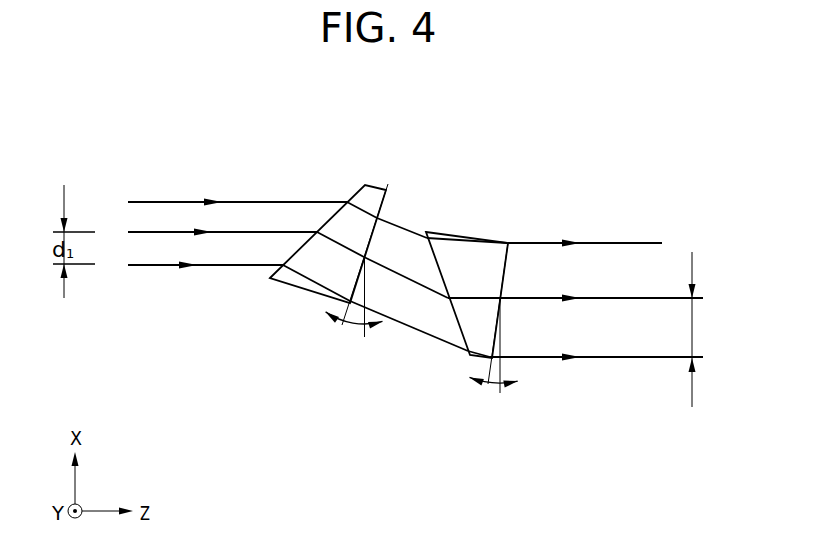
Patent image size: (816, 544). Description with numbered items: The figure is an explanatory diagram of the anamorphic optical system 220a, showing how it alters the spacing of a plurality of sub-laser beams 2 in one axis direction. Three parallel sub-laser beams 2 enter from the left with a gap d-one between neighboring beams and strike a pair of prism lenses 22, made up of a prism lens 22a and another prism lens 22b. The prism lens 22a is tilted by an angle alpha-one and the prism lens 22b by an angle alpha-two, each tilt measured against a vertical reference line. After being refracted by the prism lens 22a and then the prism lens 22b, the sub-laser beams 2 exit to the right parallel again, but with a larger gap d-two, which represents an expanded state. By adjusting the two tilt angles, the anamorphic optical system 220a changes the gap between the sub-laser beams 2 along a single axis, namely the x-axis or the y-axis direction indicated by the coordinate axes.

The sub-laser beams 2 is at (225, 267).
The prism lenses 22 is at (394, 355).
The prism lens 22a is at (315, 293).
The prism lens 22b is at (459, 325).
The anamorphic optical system 220a is at (540, 113).